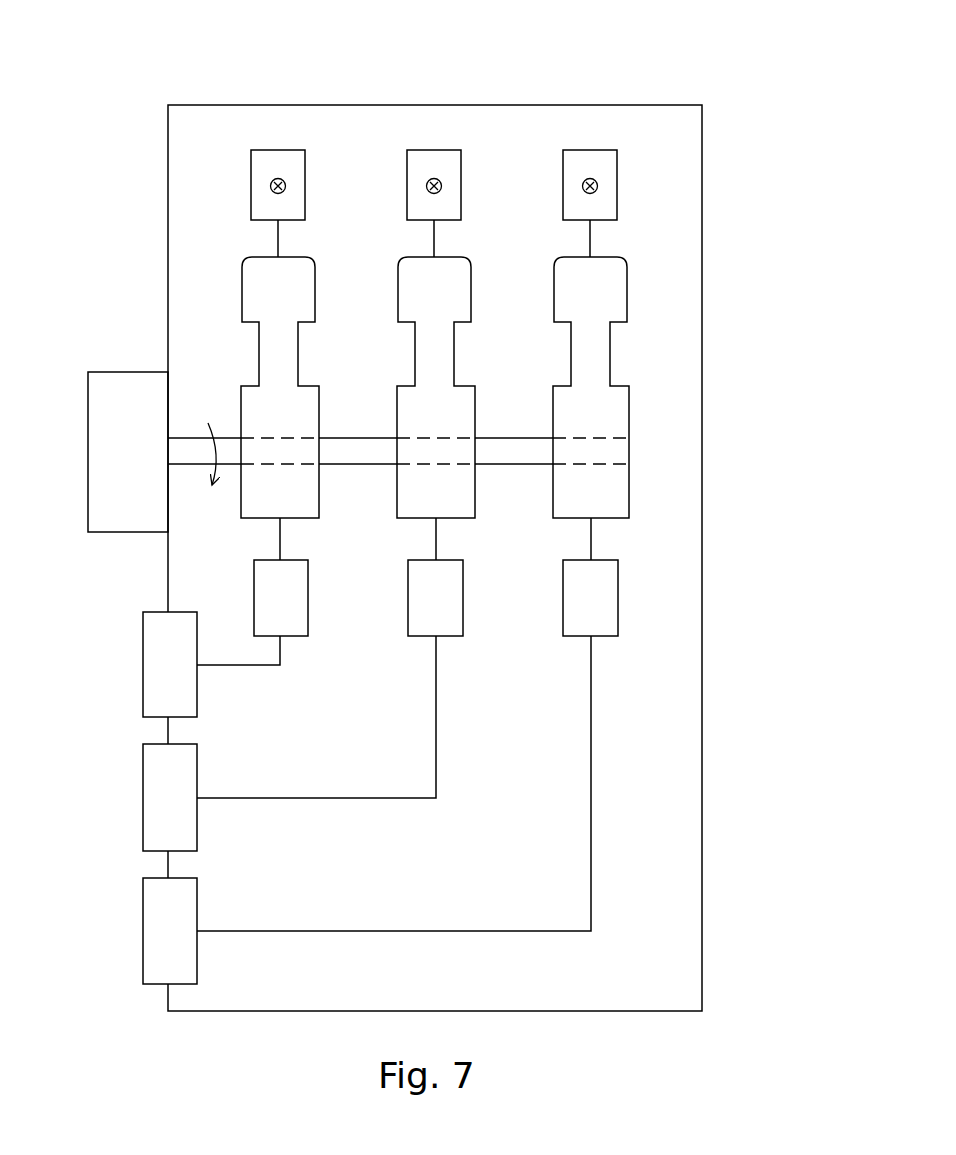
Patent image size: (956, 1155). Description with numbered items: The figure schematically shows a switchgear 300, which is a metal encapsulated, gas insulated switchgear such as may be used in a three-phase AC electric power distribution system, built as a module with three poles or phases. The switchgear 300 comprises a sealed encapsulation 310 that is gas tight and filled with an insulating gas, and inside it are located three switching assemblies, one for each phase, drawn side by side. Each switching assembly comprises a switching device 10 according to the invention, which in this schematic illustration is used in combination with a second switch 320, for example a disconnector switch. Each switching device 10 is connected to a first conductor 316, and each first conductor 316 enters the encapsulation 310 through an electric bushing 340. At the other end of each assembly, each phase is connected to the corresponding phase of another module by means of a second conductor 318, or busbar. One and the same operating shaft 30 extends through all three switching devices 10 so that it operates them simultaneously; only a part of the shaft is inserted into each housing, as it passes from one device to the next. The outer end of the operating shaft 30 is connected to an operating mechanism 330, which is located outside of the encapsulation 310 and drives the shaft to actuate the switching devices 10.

The switchgear 300 is at (760, 731).
The sealed encapsulation 310 is at (702, 225).
The second conductor 318 is at (279, 150).
The switching device 10 is at (319, 398).
The operating shaft 30 is at (518, 465).
The operating mechanism 330 is at (119, 372).
The second switch 320 is at (308, 610).
The first conductor 316 is at (247, 665).
The electric bushing 340 is at (142, 680).